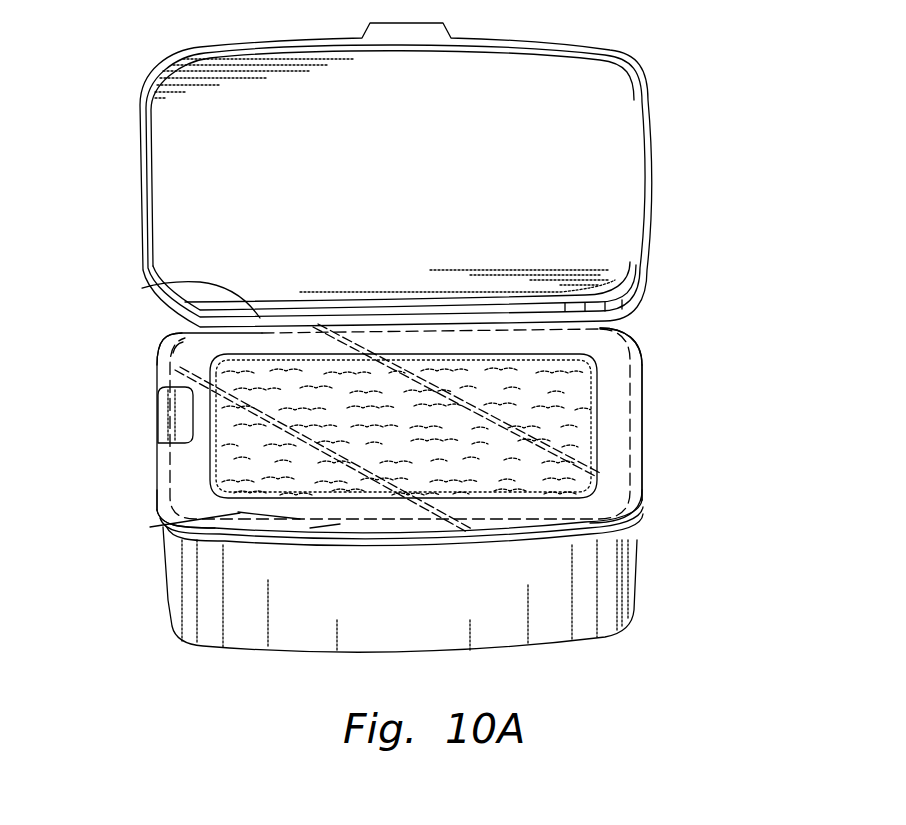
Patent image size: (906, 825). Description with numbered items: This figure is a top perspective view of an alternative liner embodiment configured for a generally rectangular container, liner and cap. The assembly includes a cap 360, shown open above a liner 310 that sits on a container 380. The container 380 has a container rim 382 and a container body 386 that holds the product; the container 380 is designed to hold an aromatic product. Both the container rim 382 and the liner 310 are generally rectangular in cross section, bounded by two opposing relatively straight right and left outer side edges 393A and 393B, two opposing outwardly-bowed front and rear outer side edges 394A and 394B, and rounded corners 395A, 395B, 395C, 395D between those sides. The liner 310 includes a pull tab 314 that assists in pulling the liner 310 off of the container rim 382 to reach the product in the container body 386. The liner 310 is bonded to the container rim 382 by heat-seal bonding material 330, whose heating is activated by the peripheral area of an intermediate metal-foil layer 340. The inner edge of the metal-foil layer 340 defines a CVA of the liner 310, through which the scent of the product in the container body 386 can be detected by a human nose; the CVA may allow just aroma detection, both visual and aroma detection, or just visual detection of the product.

The cap 360 is at (653, 98).
The rear outer side edge 394B is at (150, 283).
The liner 310 is at (644, 404).
The heat-seal bonding material 330 is at (617, 533).
The container 380 is at (647, 570).
The container body 386 is at (637, 588).
The container rim 382 is at (648, 468).
The left outer side edge 393B is at (155, 429).
The pull tab 314 is at (165, 430).
The right outer side edge 393A is at (647, 437).
The rounded corner 395A is at (628, 334).
The rounded corner 395B is at (640, 517).
The rounded corner 395C is at (157, 523).
The rounded corner 395D is at (158, 348).
The element CVA is at (588, 398).
The intermediate metal-foil layer 340 is at (238, 512).
The front outer side edge 394A is at (310, 528).